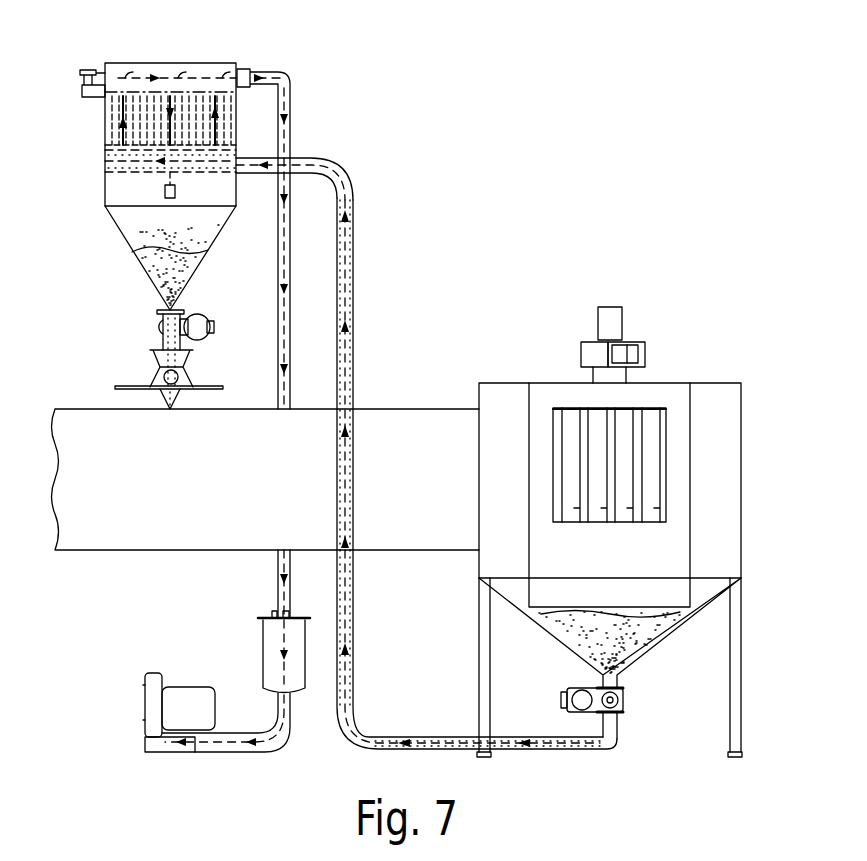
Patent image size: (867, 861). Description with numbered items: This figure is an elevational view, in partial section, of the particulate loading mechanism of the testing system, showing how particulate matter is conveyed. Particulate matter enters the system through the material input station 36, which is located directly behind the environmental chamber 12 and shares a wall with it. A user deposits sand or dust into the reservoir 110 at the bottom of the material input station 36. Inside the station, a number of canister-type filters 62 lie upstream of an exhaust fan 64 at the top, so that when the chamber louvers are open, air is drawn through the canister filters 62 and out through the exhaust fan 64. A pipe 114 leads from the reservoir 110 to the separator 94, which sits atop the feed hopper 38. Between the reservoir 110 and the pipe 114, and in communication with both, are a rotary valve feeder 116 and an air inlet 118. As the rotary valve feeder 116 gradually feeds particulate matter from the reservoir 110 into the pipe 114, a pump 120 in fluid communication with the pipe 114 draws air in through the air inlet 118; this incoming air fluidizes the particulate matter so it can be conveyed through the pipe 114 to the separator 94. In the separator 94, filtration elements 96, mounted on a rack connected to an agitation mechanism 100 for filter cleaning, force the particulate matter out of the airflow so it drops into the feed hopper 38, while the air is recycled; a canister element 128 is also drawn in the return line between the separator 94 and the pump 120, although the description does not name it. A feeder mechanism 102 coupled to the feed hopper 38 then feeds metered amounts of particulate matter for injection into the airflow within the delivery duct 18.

The environmental chamber 12 is at (744, 400).
The delivery duct 18 is at (426, 420).
The material input station 36 is at (537, 407).
The feed hopper 38 is at (140, 245).
The canister-type filters 62 is at (583, 420).
The exhaust fan 64 is at (590, 345).
The separator 94 is at (108, 150).
The filtration elements 96 is at (108, 118).
The agitation mechanism 100 is at (90, 70).
The feeder mechanism 102 is at (167, 348).
The reservoir 110 is at (646, 640).
The pipe 114 is at (565, 750).
The rotary valve feeder 116 is at (617, 703).
The air inlet 118 is at (575, 690).
The pump 120 is at (193, 695).
The filter 128 is at (275, 636).